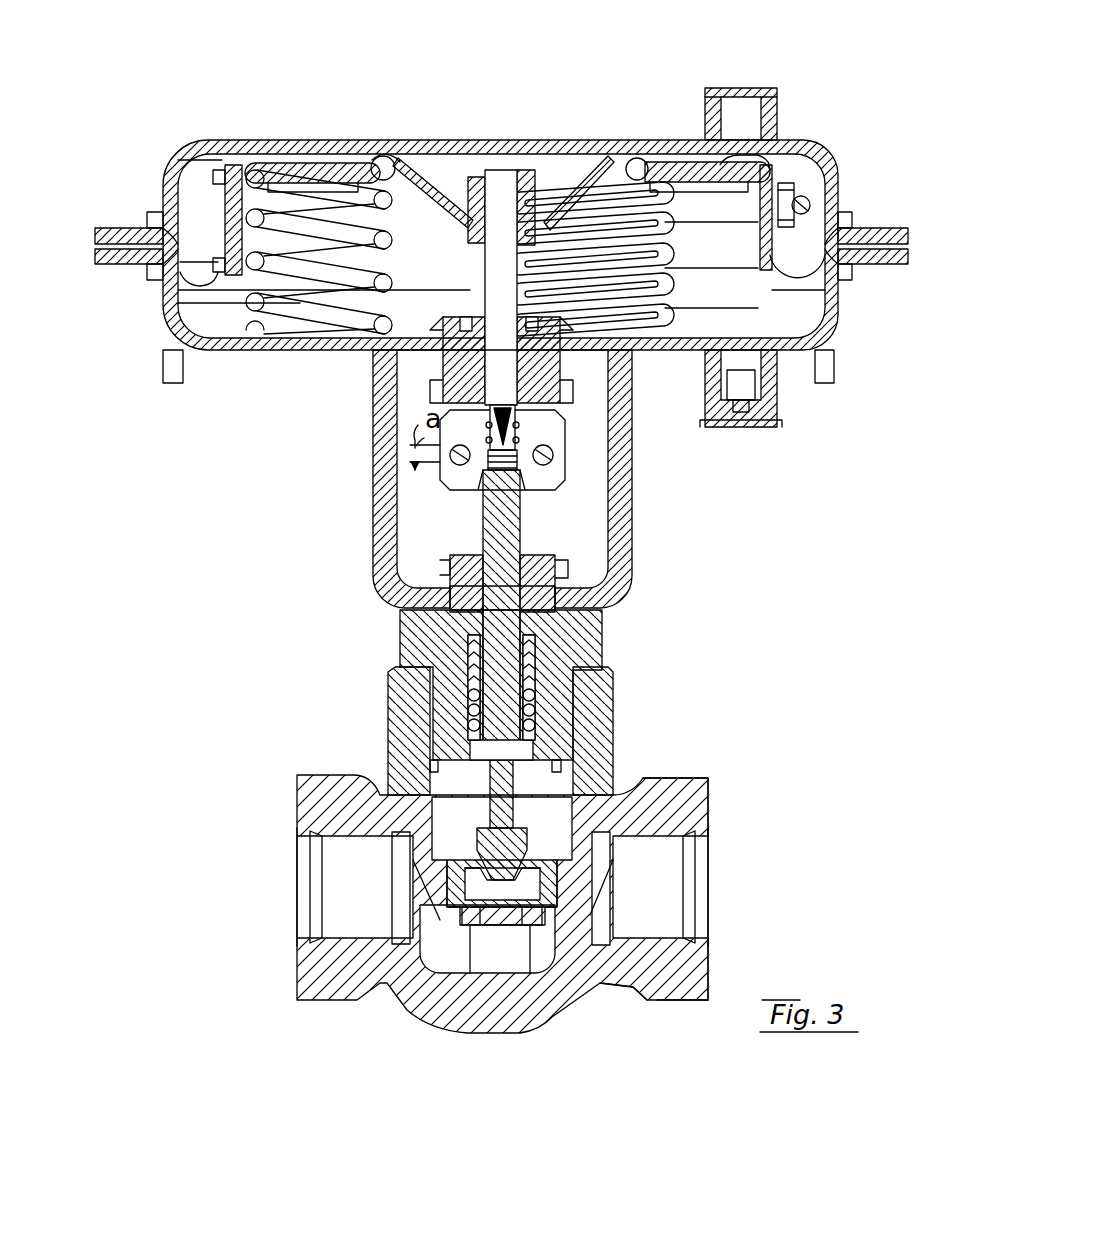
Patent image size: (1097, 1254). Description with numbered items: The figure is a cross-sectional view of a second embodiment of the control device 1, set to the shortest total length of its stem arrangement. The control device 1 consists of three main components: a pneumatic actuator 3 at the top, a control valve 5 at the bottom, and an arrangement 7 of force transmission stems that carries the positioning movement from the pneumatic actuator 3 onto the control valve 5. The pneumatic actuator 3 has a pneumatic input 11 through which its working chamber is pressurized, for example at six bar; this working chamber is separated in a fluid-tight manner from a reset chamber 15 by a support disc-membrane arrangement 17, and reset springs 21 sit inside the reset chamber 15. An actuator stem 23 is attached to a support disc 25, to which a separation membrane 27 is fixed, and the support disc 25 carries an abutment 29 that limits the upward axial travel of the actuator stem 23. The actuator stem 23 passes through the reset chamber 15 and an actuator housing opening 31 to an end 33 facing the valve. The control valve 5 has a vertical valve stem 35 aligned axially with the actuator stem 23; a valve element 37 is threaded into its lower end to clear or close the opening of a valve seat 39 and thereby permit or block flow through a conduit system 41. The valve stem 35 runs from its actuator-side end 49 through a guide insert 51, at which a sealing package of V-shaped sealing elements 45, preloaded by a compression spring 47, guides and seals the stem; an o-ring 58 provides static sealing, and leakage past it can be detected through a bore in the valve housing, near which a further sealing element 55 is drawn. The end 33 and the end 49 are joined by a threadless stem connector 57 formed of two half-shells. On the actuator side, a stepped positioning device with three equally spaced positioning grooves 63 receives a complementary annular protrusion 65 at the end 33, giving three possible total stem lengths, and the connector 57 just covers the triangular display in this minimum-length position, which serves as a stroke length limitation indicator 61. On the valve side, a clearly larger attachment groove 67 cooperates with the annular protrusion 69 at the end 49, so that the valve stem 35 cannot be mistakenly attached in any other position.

The control device 1 is at (838, 146).
The pneumatic actuator 3 is at (503, 140).
The control valve 5 is at (716, 792).
The arrangement of force transmission stems 7 is at (458, 528).
The pneumatic input 11 is at (782, 107).
The reset chamber 15 is at (735, 318).
The support disc-membrane arrangement 17 is at (300, 172).
The reset springs 21 is at (300, 318).
The actuator stem 23 is at (500, 388).
The support disc 25 is at (612, 158).
The separation membrane 27 is at (835, 302).
The abutment 29 is at (388, 158).
The actuator housing opening 31 is at (610, 364).
The valve-side end of actuator stem 33 is at (518, 412).
The valve stem 35 is at (500, 708).
The valve element 37 is at (487, 905).
The valve seat 39 is at (527, 925).
The conduit system 41 is at (678, 990).
The V-shaped sealing elements 45 is at (432, 652).
The compression spring 47 is at (533, 735).
The actuator-side end of valve stem 49 is at (556, 590).
The guide insert 51 is at (400, 700).
The gland seal 55 is at (561, 766).
The stem connector 57 is at (568, 492).
The o-ring 58 is at (700, 815).
The stroke length limitation indicator 61 is at (488, 460).
The positioning grooves 63 is at (545, 432).
The annular protrusion of actuator stem 65 is at (482, 482).
The attachment groove 67 is at (555, 560).
The annular protrusion of valve stem 69 is at (450, 582).